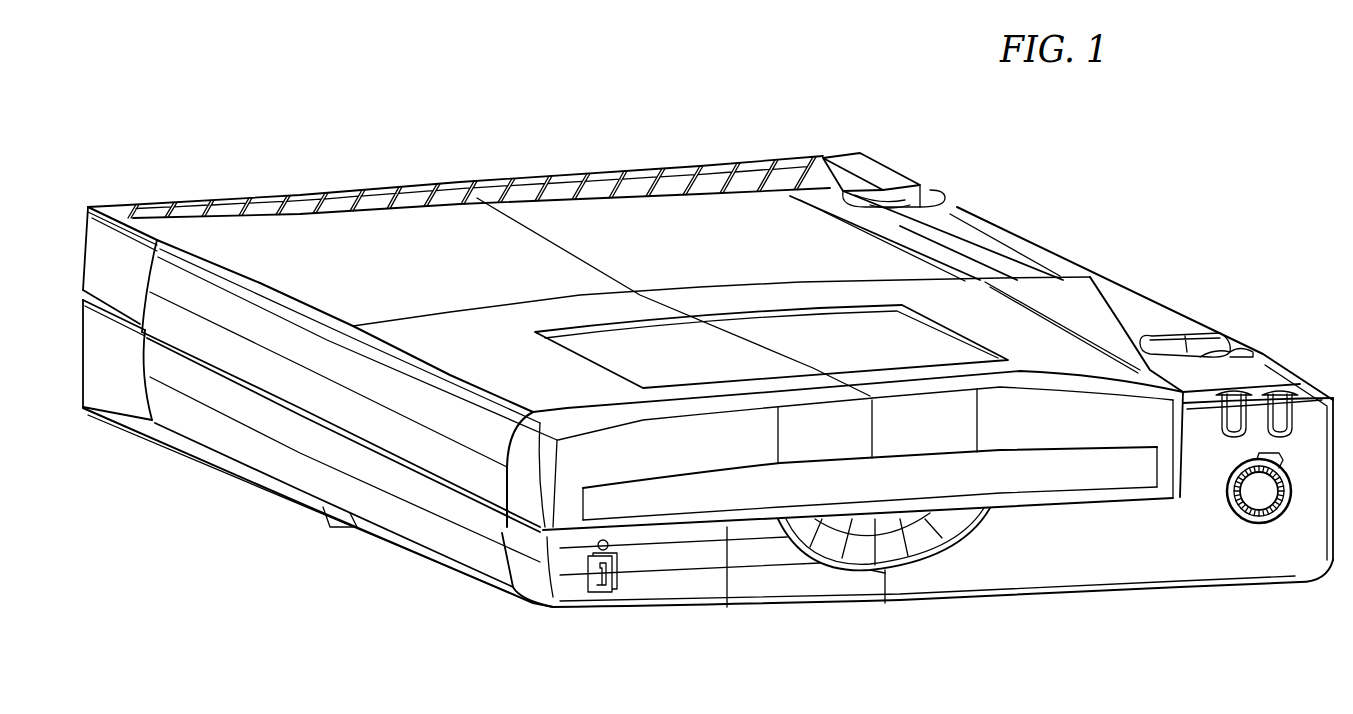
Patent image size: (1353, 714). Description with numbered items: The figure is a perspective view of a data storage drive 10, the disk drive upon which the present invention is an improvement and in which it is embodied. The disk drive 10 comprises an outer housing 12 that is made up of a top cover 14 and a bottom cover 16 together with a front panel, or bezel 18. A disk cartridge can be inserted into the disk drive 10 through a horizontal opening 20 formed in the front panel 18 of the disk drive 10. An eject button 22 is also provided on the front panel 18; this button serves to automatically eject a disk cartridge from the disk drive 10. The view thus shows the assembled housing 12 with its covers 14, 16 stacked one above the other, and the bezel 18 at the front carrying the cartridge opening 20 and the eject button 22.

The data storage drive 10 is at (417, 143).
The outer housing 12 is at (687, 228).
The top cover 14 is at (108, 257).
The bottom cover 16 is at (112, 363).
The front panel 18 is at (1115, 542).
The horizontal opening 20 is at (883, 473).
The eject button 22 is at (1266, 494).